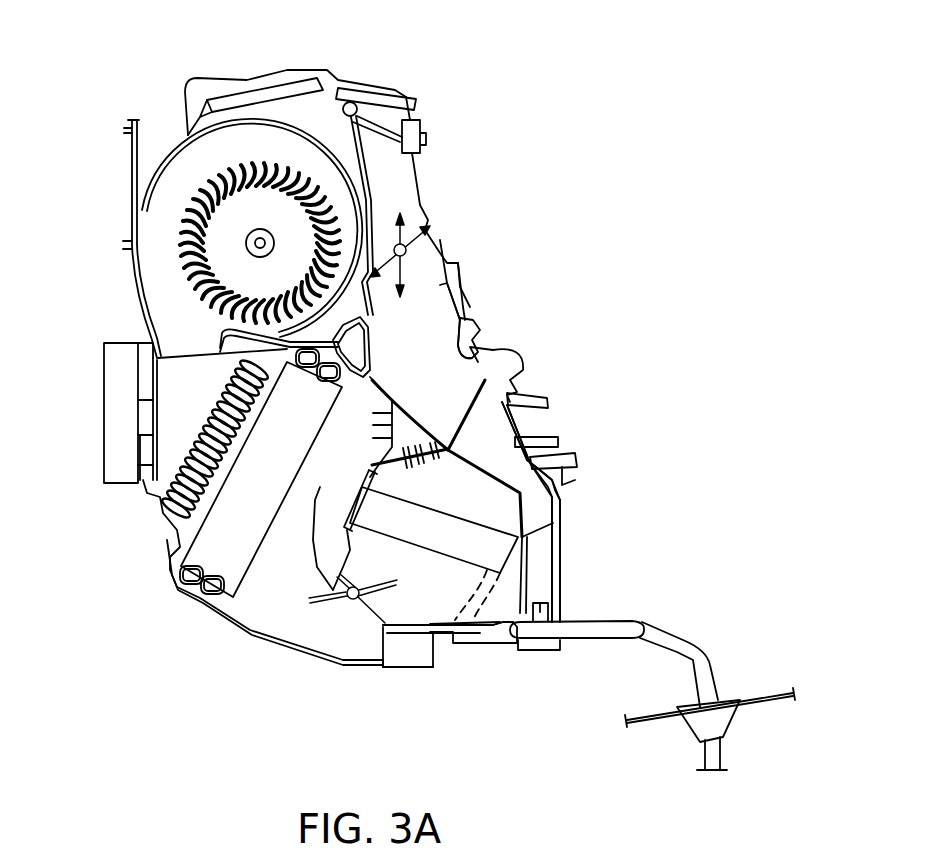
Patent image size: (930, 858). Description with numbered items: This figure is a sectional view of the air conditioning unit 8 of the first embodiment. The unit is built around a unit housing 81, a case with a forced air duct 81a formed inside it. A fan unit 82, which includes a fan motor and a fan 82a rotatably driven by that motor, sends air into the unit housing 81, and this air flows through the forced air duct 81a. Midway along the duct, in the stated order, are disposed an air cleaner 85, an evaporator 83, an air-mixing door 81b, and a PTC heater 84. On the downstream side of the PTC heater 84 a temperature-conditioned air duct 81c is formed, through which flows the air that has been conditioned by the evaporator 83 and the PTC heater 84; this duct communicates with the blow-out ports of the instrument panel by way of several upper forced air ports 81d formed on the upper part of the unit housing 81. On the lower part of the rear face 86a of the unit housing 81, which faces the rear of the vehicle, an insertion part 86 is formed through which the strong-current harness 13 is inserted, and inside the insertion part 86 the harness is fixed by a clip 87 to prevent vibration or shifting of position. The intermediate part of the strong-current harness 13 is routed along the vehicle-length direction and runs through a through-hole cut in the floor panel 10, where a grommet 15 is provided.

The air conditioning unit 8 is at (470, 112).
The floor panel 10 is at (757, 697).
The strong-current harness 13 is at (663, 640).
The grommet 15 is at (697, 723).
The unit housing 81 is at (170, 538).
The forced air duct 81a is at (180, 393).
The air-mixing door 81b is at (368, 607).
The temperature-conditioned air duct 81c is at (433, 320).
The upper forced air ports 81d is at (393, 100).
The fan unit 82 is at (228, 150).
The fan 82a is at (187, 217).
The evaporator 83 is at (232, 547).
The PTC heater 84 is at (470, 540).
The air cleaner 85 is at (187, 462).
The insertion part 86 is at (565, 625).
The rear face 86a is at (563, 507).
The clip 87 is at (540, 640).